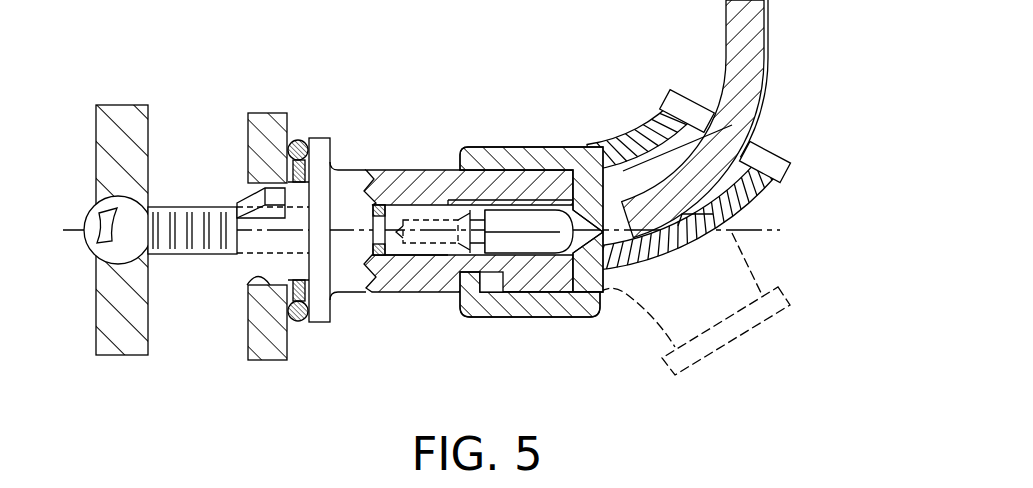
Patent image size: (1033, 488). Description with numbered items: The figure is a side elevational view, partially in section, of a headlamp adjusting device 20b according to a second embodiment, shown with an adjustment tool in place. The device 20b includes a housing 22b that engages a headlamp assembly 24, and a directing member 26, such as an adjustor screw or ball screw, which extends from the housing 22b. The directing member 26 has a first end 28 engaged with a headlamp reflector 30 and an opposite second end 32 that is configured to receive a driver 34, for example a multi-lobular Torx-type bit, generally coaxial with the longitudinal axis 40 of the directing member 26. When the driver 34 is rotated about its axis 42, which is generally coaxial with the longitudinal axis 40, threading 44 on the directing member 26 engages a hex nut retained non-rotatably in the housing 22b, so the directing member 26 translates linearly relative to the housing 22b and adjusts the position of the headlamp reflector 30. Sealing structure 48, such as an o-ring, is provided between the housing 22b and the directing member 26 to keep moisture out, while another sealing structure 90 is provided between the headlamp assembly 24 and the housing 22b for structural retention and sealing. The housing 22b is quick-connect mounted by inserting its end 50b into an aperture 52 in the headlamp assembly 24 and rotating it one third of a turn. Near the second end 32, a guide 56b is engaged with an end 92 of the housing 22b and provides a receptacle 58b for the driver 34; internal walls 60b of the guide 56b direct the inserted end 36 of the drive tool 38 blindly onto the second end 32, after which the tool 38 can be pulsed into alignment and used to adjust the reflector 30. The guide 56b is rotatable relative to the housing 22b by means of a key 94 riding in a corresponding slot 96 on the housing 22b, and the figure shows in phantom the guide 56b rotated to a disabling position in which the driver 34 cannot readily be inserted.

The device 20b is at (363, 308).
The housing 22b is at (412, 168).
The headlamp assembly 24 is at (250, 357).
The directing member 26 is at (190, 205).
The first end 28 is at (88, 220).
The headlamp reflector 30 is at (108, 356).
The second end 32 is at (445, 247).
The driver 34 is at (407, 249).
The end of drive tool 36 is at (450, 256).
The drive tool 38 is at (778, 67).
The longitudinal axis 40 is at (262, 272).
The axis 42 is at (525, 232).
The threading 44 is at (200, 243).
The sealing structure 48 is at (381, 208).
The end of housing 50b is at (236, 190).
The aperture 52 is at (262, 290).
The guide 56b is at (764, 200).
The receptacle 58b is at (764, 134).
The internal walls 60b is at (699, 110).
The sealing structure 90 is at (298, 322).
The end of housing 92 is at (604, 156).
The key 94 is at (527, 195).
The slot 96 is at (498, 290).